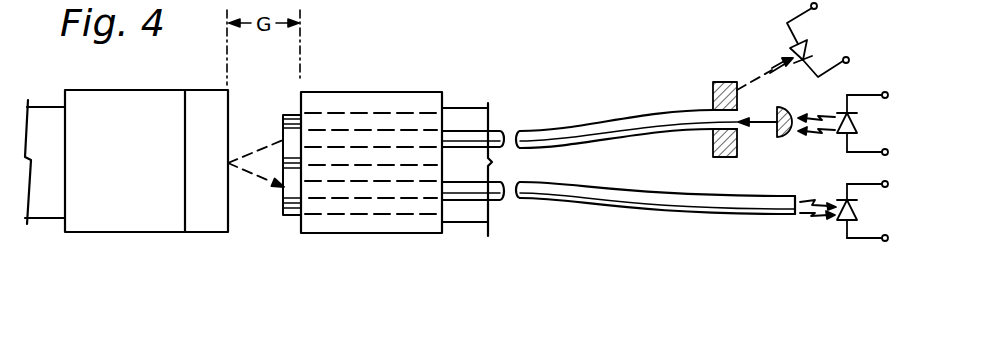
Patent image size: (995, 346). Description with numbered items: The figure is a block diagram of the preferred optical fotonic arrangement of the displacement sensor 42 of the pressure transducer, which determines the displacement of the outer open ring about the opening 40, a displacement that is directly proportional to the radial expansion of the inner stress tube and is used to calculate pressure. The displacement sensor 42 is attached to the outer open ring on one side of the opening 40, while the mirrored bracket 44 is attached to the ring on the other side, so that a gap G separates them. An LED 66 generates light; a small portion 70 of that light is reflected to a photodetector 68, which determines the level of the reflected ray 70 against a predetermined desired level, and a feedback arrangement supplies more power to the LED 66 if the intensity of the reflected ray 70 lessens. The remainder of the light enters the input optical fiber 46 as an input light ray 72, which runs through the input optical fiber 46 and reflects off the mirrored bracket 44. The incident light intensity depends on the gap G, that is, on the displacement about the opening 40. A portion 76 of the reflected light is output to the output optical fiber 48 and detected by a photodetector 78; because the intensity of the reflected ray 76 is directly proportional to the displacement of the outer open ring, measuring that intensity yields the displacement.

The opening 40 is at (268, 232).
The displacement sensor 42 is at (386, 93).
The mirrored bracket 44 is at (207, 103).
The input optical fiber 46 is at (627, 128).
The output optical fiber 48 is at (637, 203).
The LED 66 is at (845, 140).
The photodetector 68 is at (810, 43).
The reflected ray 70 is at (762, 75).
The input light ray 72 is at (257, 148).
The reflected ray 76 is at (252, 177).
The photodetector 78 is at (842, 226).